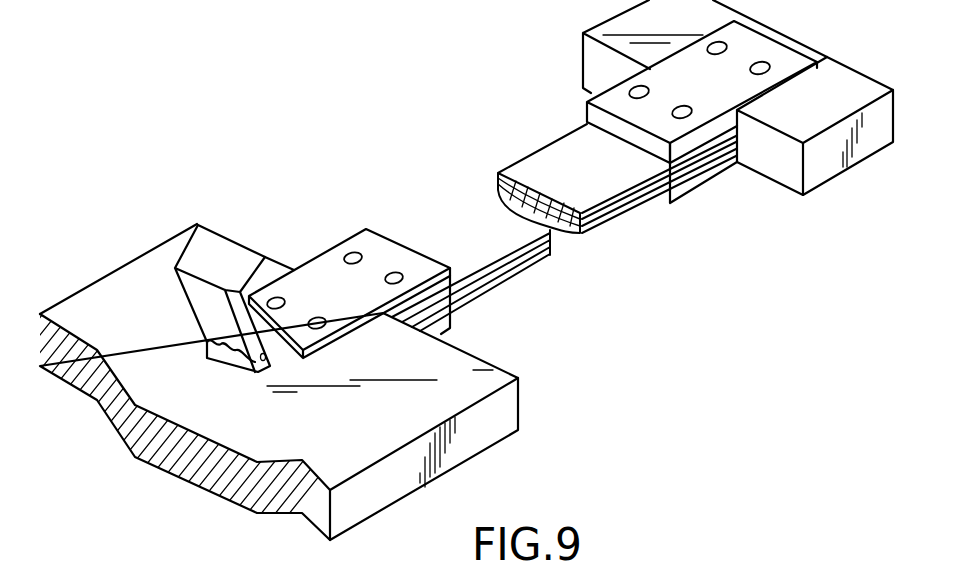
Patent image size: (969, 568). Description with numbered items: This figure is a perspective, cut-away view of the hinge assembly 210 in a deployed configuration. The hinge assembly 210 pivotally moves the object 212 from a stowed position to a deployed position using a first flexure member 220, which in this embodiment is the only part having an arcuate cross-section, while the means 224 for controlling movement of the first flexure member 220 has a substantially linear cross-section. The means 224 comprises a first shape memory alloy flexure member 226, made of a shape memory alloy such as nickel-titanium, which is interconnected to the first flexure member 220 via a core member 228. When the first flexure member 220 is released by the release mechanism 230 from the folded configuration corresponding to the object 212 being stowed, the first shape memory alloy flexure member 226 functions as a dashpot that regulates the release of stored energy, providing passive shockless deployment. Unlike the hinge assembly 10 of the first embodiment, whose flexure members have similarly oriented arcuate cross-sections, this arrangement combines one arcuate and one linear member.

The hinge assembly 10 is at (512, 118).
The hinge assembly 210 is at (614, 281).
The object 212 is at (690, 24).
The first flexure member 220 is at (480, 294).
The means for controlling movement of the first flexure member 224 is at (414, 202).
The first shape memory alloy flexure member 226 is at (478, 252).
The core member 228 is at (550, 230).
The release mechanism 230 is at (217, 247).